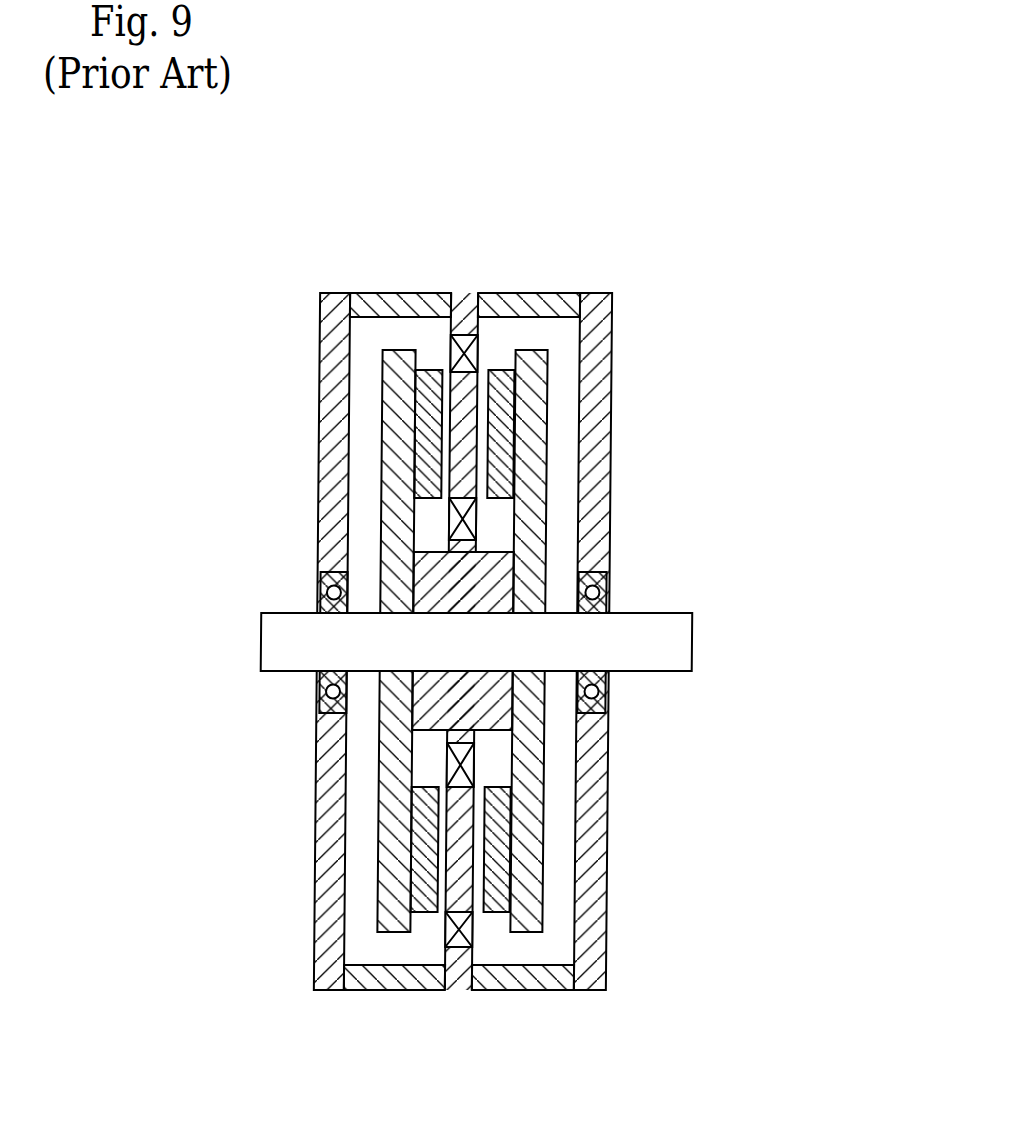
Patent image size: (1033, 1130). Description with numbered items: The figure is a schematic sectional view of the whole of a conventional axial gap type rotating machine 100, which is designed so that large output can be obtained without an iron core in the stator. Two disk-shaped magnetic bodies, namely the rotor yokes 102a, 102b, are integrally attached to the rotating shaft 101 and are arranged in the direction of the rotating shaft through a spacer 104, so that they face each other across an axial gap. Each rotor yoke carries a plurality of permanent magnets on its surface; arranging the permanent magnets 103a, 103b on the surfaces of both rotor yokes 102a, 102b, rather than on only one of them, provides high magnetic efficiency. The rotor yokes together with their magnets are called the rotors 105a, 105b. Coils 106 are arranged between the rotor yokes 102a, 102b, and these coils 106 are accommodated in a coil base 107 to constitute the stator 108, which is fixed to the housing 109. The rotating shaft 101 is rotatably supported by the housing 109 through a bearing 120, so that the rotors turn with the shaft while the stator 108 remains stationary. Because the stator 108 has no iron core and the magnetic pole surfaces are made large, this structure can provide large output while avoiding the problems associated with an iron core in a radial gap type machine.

The rotating machine (prior art) 100 is at (648, 250).
The rotating shaft 101 is at (685, 637).
The rotor yoke 102a is at (391, 372).
The rotor yoke 102b is at (535, 410).
The permanent magnets 103a is at (418, 402).
The permanent magnets 103b is at (503, 388).
The spacer 104 is at (439, 567).
The rotor 105a is at (430, 342).
The rotor 105b is at (495, 342).
The coils 106 is at (469, 516).
The coil base 107 is at (469, 888).
The stator 108 is at (458, 993).
The housing 109 is at (600, 443).
The bearing 120 is at (606, 573).